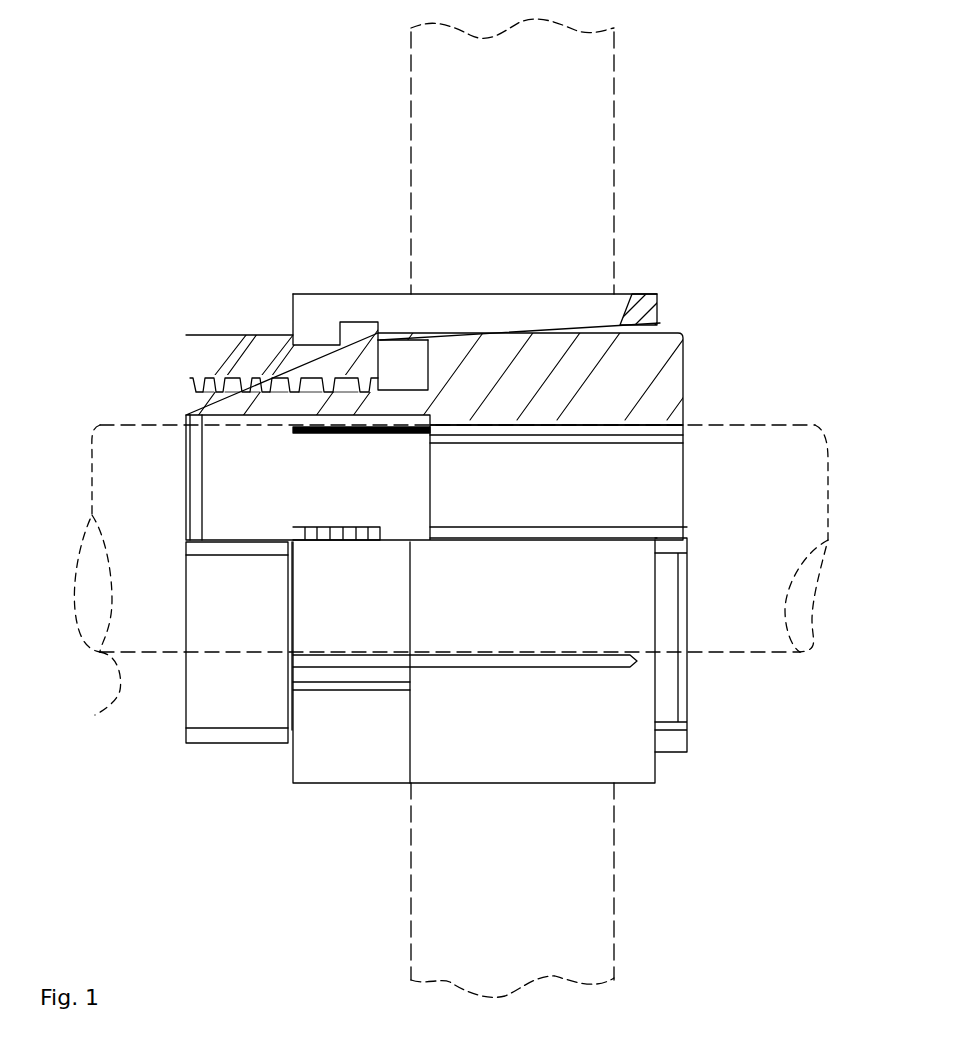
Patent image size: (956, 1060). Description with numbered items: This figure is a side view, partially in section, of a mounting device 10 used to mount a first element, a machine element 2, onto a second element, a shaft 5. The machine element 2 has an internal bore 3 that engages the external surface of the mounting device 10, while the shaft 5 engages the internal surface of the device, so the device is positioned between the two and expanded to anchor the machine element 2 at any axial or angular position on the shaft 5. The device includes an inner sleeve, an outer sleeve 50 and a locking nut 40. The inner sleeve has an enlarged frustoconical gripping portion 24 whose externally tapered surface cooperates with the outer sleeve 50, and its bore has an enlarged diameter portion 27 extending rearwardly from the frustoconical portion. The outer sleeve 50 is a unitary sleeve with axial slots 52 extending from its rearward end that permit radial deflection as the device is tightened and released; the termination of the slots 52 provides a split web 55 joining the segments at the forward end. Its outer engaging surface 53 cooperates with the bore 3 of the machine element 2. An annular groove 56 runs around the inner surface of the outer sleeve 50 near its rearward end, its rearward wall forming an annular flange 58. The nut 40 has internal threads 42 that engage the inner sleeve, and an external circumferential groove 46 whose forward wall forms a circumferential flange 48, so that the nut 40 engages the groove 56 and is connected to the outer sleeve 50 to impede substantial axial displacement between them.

The machine element 2 is at (597, 128).
The internal bore of the machine element 3 is at (590, 282).
The shaft 5 is at (95, 712).
The mounting device 10 is at (312, 808).
The frustoconical gripping portion 24 is at (598, 335).
The enlarged diameter portion of the bore 27 is at (393, 425).
The locking nut 40 is at (220, 708).
The threads 42 is at (243, 375).
The external circumferential groove 46 is at (290, 345).
The circumferential flange 48 is at (375, 326).
The outer sleeve 50 is at (642, 788).
The axial slots 52 is at (588, 666).
The engaging surface 53 is at (530, 293).
The split web 55 is at (660, 300).
The annular groove 56 is at (323, 338).
The annular flange 58 is at (325, 337).